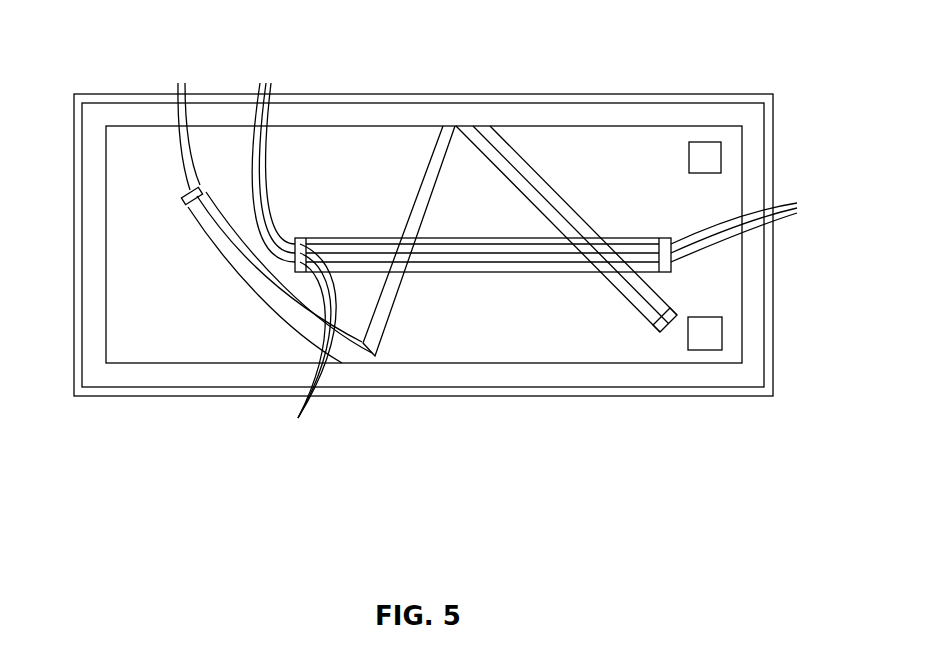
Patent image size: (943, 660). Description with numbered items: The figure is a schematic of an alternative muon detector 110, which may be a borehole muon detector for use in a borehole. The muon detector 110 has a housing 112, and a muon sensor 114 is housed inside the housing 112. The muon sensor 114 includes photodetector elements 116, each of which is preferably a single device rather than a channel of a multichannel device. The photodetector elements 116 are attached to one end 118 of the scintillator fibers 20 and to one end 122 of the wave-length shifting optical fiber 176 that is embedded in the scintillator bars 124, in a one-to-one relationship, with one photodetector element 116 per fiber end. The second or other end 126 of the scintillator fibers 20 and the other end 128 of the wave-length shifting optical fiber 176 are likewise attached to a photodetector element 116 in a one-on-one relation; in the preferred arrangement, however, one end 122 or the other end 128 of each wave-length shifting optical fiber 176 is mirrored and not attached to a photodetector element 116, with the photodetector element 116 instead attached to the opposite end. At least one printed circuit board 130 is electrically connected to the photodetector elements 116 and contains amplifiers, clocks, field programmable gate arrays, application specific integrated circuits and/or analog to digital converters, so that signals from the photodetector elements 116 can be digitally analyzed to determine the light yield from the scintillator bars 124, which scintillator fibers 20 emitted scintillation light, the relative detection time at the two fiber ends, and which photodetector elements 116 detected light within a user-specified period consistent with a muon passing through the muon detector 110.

The muon detector 110 is at (766, 58).
The housing 112 is at (772, 129).
The muon sensor 114 is at (736, 252).
The photodetector elements 116 is at (693, 448).
The one end of scintillator fibers 118 is at (676, 314).
The cable 20 is at (638, 280).
The one end of wave-length shifting optical fiber 122 is at (658, 239).
The scintillator bars 124 is at (462, 244).
The other end of scintillator fibers 126 is at (195, 209).
The other end of wave-length shifting optical fiber 128 is at (280, 325).
The printed circuit board 130 is at (707, 154).
The wave-length shifting optical fiber 176 is at (550, 240).